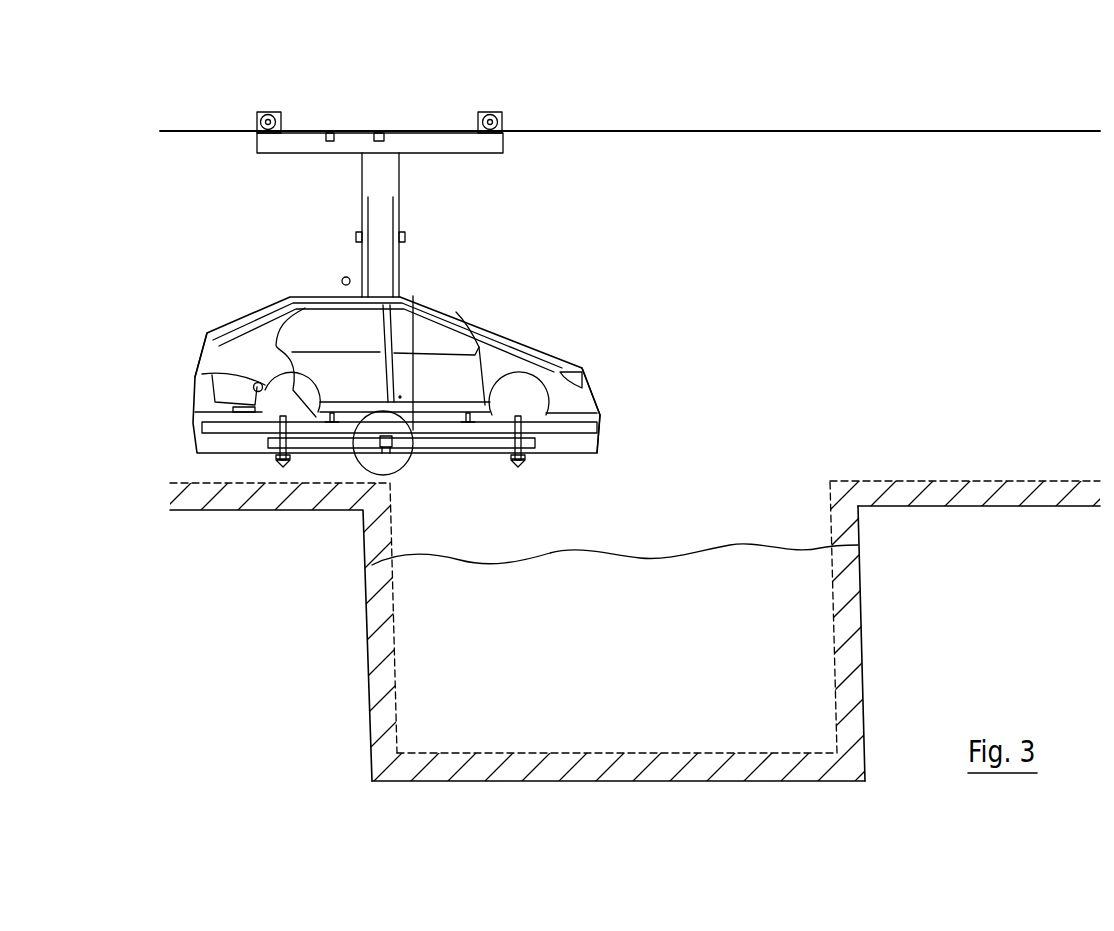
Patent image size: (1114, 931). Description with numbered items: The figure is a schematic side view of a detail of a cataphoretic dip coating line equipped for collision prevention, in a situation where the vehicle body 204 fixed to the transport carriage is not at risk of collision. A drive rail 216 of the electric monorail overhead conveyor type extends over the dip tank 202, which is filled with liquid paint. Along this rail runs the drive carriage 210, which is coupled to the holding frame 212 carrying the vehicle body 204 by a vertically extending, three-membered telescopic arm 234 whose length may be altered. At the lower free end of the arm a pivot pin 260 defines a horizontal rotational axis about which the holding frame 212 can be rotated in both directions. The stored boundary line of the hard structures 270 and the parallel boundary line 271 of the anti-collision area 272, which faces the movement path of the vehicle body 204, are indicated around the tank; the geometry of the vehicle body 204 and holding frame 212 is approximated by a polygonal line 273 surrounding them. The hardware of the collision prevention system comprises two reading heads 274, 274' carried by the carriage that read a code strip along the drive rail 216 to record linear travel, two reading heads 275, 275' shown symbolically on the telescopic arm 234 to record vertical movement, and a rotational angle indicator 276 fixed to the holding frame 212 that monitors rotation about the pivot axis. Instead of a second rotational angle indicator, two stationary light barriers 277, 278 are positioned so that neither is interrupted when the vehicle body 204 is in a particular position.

The dip tank 202 is at (728, 665).
The vehicle body 204 is at (492, 367).
The drive carriage 210 is at (497, 150).
The holding frame 212 is at (492, 437).
The drive rail 216 is at (725, 130).
The telescopic arm 234 is at (386, 270).
The pivot pin 260 is at (362, 475).
The boundary line of the hard structures 270 is at (860, 608).
The boundary line of the anti-collision area 271 is at (947, 481).
The anti-collision area 272 is at (538, 752).
The polygonal line 273 is at (601, 402).
The reading head 274 is at (326, 81).
The reading head 274' is at (403, 81).
The reading head 275 is at (318, 212).
The reading head 275' is at (438, 213).
The rotational angle indicator 276 is at (412, 468).
The light barrier 277 is at (190, 375).
The light barrier 278 is at (343, 279).